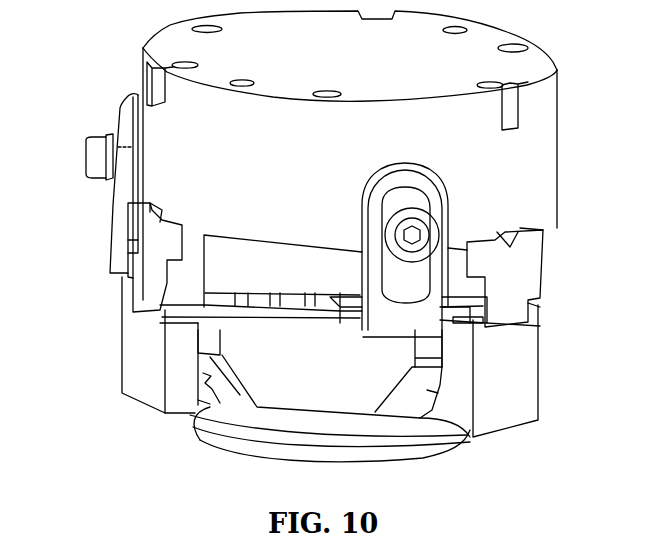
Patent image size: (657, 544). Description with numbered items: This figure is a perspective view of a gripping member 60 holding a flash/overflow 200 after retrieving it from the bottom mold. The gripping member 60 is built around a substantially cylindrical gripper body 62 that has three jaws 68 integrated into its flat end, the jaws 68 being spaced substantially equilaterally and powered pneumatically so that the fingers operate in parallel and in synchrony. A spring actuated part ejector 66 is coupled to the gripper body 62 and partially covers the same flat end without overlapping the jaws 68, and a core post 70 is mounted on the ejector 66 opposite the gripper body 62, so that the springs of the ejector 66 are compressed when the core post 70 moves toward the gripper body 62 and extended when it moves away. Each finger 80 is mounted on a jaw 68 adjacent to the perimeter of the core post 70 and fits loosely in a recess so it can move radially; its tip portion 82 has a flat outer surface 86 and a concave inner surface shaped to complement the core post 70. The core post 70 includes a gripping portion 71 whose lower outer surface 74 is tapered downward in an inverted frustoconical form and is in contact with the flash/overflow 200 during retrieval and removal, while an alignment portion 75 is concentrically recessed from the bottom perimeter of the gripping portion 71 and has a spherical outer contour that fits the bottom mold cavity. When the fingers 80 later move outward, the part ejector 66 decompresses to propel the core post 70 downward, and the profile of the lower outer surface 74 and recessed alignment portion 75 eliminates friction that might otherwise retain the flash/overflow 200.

The gripping member 60 is at (100, 100).
The gripper body 62 is at (350, 155).
The spring actuated part ejector 66 is at (335, 296).
The jaw 68 is at (150, 253).
The core post 70 is at (320, 374).
The gripping portion 71 is at (392, 350).
The lower outer surface 74 is at (233, 393).
The alignment portion 75 is at (390, 451).
The finger 80 is at (150, 368).
The tip portion 82 is at (183, 400).
The flat outer surface 86 is at (190, 418).
The flash/overflow 200 is at (363, 425).